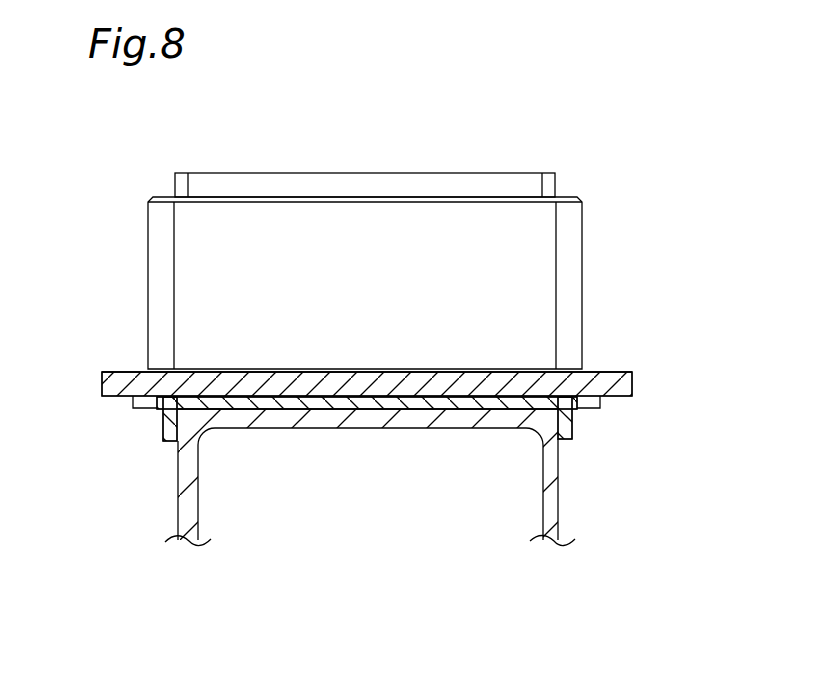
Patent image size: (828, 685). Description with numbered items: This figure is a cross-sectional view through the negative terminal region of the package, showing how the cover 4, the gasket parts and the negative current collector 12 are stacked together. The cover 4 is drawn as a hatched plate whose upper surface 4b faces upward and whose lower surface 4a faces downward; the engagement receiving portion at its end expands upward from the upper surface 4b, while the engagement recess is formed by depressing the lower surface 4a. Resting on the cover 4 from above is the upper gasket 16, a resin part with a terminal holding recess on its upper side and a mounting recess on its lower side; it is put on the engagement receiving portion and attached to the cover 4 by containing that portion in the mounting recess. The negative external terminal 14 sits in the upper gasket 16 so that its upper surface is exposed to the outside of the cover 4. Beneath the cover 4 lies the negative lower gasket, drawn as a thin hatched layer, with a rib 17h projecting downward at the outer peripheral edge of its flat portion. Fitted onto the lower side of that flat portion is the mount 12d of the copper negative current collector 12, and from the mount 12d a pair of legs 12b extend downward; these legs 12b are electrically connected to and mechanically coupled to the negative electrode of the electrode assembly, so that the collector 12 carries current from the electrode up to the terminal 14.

The cover 4 is at (91, 386).
The lower surface of the cover 4a is at (117, 398).
The upper surface of the cover 4b is at (120, 370).
The negative current collector 12 is at (572, 517).
The legs 12b is at (185, 472).
The mount 12d is at (365, 430).
The negative external terminal 14 is at (525, 177).
The upper gasket 16 is at (538, 285).
The rib 17h is at (570, 425).